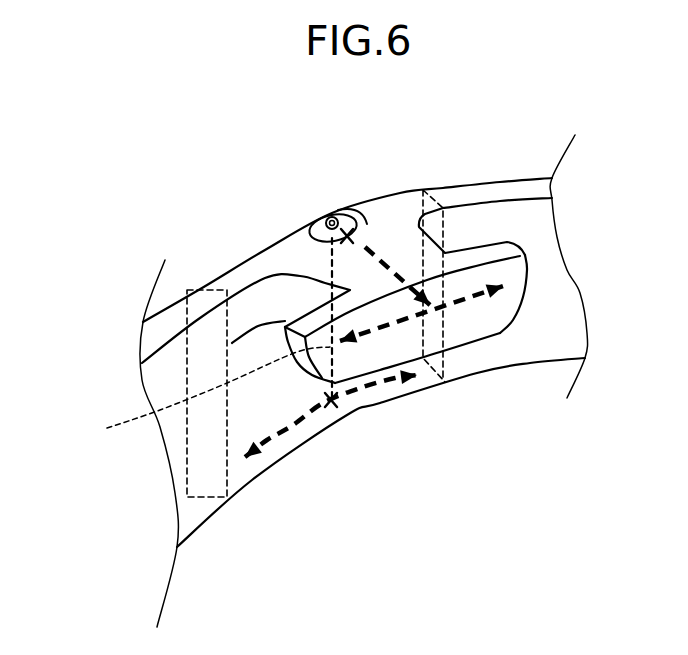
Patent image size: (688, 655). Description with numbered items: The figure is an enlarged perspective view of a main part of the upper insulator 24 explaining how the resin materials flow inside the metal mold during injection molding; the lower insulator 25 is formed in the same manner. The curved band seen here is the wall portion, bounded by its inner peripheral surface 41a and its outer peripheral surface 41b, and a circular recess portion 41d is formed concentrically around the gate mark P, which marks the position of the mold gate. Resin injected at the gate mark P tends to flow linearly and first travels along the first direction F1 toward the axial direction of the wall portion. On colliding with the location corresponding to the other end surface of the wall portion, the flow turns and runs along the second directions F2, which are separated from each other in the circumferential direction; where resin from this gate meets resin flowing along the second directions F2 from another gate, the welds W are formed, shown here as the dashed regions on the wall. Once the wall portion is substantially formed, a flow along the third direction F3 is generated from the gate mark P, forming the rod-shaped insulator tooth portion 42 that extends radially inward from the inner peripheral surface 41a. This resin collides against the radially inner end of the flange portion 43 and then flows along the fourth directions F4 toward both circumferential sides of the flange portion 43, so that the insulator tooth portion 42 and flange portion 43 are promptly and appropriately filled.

The upper insulator 24 is at (412, 360).
The lower insulator 25 is at (615, 145).
The inner peripheral surface 41a is at (268, 253).
The outer peripheral surface 41b is at (228, 263).
The recess portion 41d is at (320, 220).
The gate mark P is at (327, 220).
The insulator tooth portion 42 is at (402, 247).
The flange portion 43 is at (507, 290).
The weld W is at (445, 240).
The first direction F1 is at (201, 395).
The second direction F2 is at (305, 423).
The third direction F3 is at (366, 247).
The fourth direction F4 is at (465, 300).